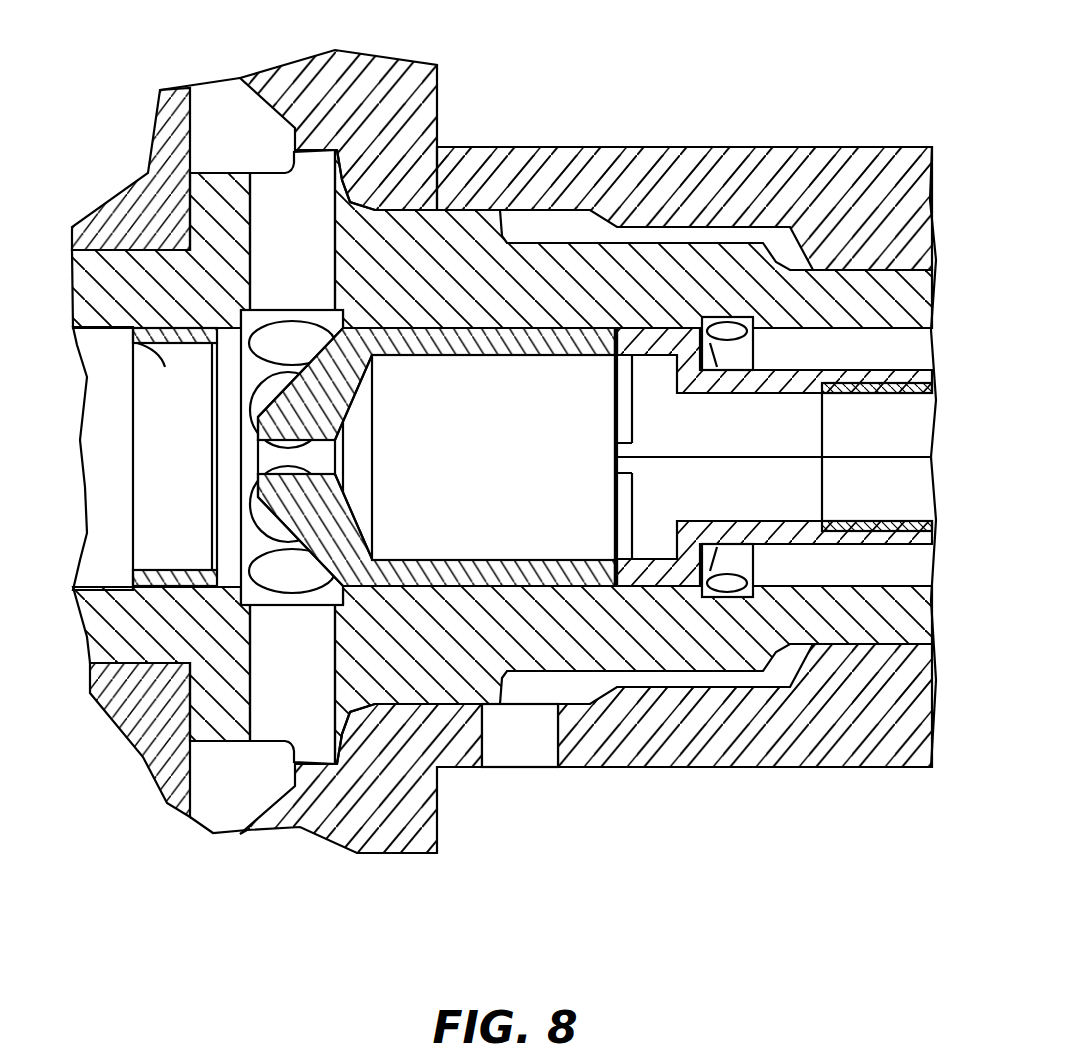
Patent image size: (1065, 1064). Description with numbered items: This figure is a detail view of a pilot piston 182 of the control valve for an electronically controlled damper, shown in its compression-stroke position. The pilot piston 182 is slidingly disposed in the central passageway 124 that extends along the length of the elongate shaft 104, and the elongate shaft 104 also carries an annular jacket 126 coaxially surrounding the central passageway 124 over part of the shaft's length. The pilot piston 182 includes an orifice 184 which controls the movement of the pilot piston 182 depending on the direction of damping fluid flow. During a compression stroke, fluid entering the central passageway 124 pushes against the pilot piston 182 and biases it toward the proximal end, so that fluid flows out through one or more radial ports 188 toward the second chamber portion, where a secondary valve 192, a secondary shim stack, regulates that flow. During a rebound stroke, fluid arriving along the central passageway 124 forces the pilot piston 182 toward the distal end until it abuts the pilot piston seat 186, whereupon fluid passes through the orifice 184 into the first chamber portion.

The elongate shaft 104 is at (653, 147).
The central passageway 124 is at (110, 337).
The annular jacket 126 is at (838, 340).
The pilot piston 182 is at (325, 560).
The orifice 184 is at (262, 453).
The pilot piston seat 186 is at (160, 368).
The radial ports 188 is at (280, 207).
The secondary valve 192 is at (163, 123).